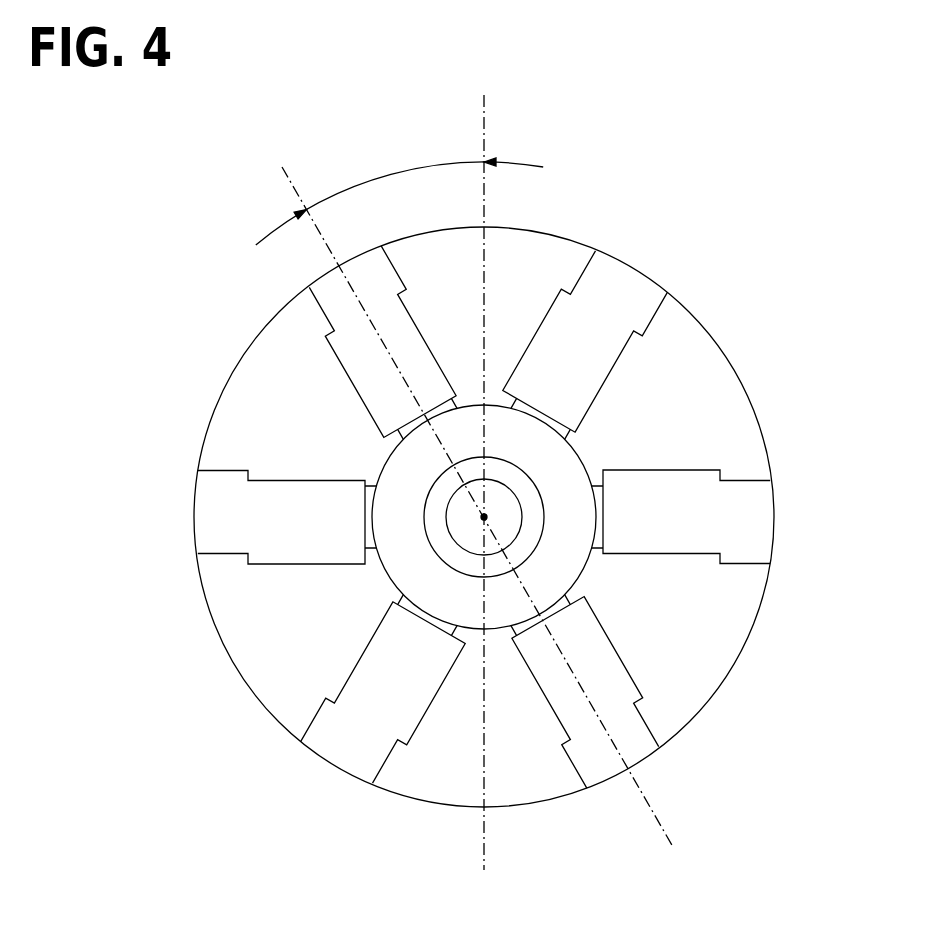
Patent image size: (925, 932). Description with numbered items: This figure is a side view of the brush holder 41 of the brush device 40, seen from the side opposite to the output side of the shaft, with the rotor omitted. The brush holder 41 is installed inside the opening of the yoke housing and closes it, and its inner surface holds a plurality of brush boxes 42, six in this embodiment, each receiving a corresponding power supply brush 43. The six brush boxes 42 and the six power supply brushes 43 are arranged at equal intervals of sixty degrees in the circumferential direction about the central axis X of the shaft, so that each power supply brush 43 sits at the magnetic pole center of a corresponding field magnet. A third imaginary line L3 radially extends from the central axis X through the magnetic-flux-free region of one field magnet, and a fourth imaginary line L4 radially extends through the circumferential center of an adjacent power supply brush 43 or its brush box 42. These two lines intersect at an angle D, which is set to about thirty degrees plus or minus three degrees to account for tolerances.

The brush device 40 is at (757, 314).
The brush holder 41 is at (763, 432).
The brush box 42 is at (322, 316).
The power supply brush 43 is at (393, 420).
The central axis X is at (486, 516).
The third imaginary line L3 is at (485, 195).
The fourth imaginary line L4 is at (292, 187).
The angle D is at (388, 177).